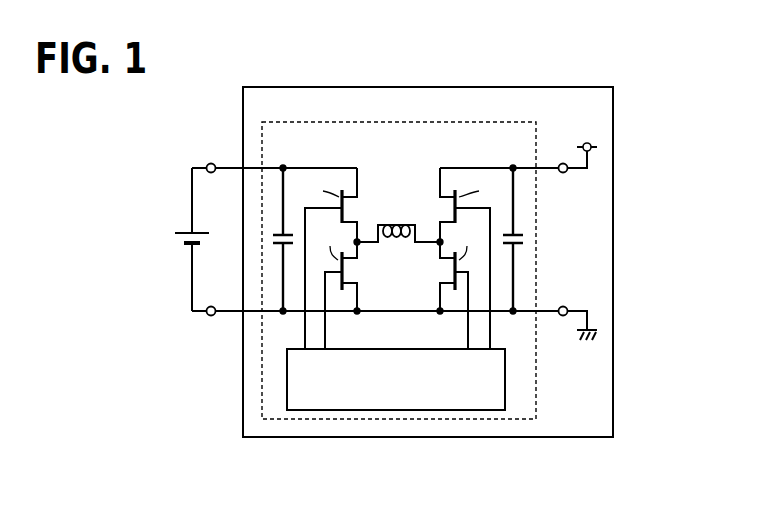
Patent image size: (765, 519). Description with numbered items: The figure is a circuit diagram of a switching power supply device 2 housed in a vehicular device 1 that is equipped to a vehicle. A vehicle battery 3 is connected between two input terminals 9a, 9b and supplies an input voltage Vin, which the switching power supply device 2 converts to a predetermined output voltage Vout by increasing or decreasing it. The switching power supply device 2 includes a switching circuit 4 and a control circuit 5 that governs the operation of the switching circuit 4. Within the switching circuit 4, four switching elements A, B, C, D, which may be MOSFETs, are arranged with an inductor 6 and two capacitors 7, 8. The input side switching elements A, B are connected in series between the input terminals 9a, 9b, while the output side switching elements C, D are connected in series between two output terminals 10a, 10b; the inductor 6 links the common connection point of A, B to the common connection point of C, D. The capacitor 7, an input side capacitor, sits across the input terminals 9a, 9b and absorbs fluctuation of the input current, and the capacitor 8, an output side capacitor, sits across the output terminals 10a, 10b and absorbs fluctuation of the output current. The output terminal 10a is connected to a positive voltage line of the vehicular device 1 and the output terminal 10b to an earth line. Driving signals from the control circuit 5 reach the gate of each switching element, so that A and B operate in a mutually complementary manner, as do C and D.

The vehicular device 1 is at (466, 87).
The switching power supply device 2 is at (350, 419).
The vehicle battery 3 is at (180, 243).
The switching circuit 4 is at (407, 190).
The control circuit 5 is at (412, 410).
The inductor 6 is at (398, 243).
The capacitor 7 is at (280, 233).
The capacitor 8 is at (516, 234).
The input terminal 9a is at (209, 163).
The input terminal 9b is at (211, 316).
The output terminal 10a is at (566, 164).
The output terminal 10b is at (566, 307).